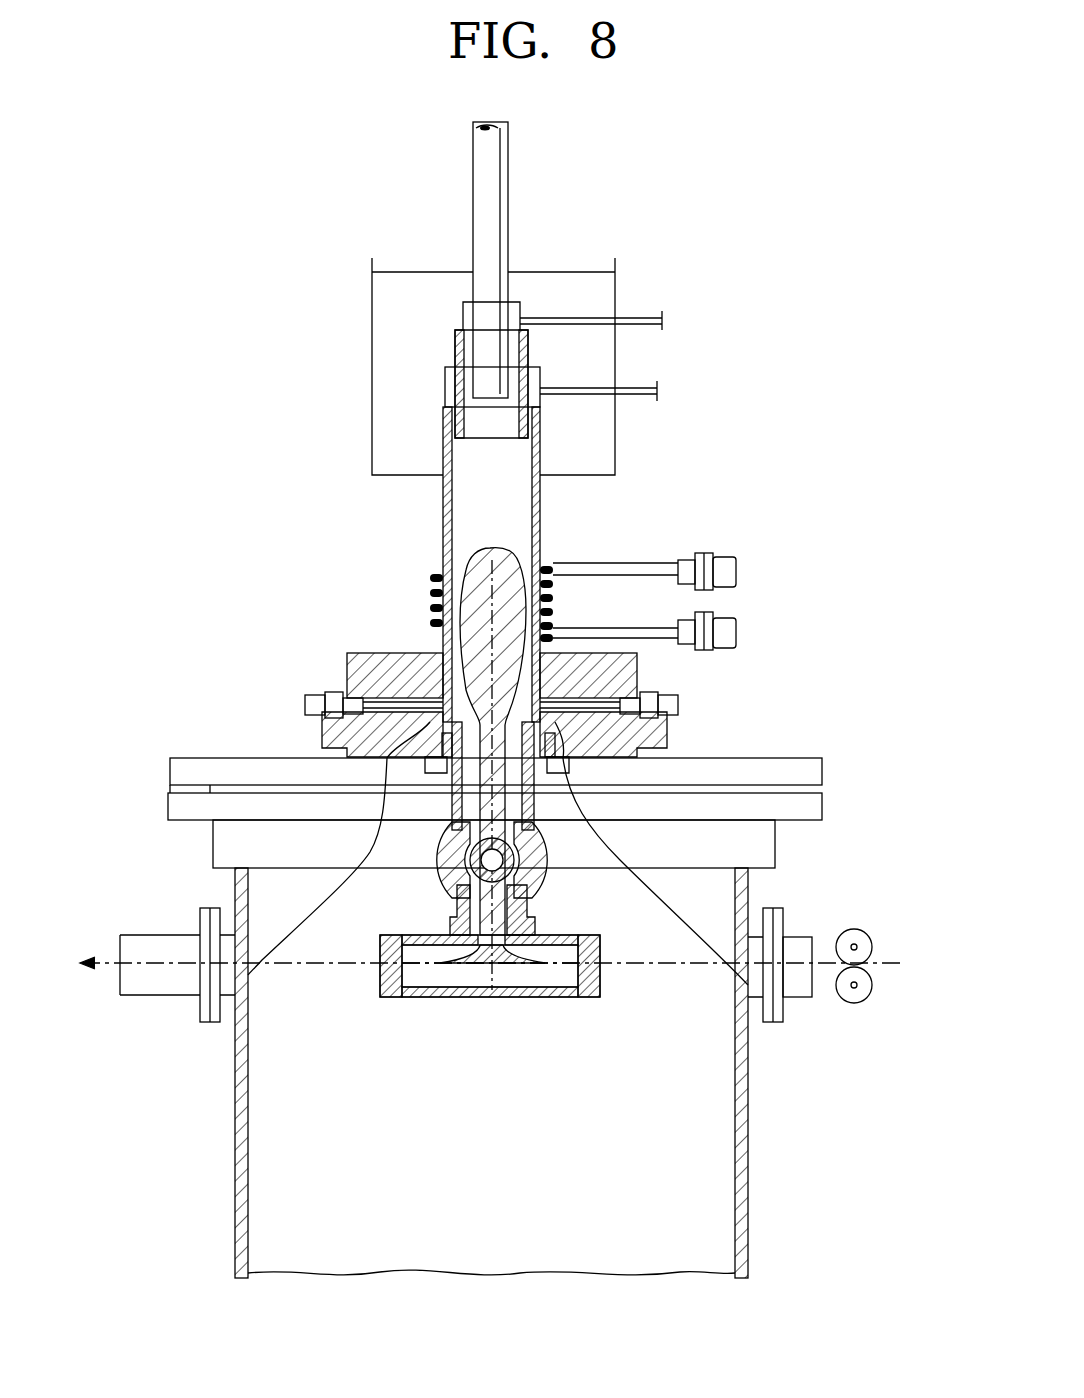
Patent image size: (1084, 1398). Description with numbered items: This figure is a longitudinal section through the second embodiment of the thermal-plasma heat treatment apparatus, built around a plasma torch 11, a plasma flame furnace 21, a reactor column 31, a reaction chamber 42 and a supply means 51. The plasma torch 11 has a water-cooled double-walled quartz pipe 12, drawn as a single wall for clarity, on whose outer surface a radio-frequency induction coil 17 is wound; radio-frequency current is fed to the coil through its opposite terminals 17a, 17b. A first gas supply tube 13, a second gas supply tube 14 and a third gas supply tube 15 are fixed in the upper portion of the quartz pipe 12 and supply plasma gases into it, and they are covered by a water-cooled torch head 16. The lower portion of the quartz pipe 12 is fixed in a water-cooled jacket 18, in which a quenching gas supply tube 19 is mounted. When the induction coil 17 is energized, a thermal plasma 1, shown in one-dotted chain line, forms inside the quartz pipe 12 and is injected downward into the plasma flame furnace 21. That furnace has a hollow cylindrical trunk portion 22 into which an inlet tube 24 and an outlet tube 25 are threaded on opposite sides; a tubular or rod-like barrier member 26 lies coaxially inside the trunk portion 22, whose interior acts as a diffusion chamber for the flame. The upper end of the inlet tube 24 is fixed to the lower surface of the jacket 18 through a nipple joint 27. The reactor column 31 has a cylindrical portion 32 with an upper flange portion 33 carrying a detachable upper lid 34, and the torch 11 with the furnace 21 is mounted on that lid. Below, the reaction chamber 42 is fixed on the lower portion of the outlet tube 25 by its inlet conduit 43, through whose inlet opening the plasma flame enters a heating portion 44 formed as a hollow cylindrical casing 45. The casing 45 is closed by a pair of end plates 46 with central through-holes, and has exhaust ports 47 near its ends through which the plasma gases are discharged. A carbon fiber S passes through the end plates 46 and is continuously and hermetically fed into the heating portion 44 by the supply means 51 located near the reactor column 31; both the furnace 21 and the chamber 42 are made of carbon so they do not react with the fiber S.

The thermal plasma 1 is at (516, 572).
The plasma torch 11 is at (646, 205).
The water-cooled double-walled quartz pipe 12 is at (443, 522).
The first gas supply tube 13 is at (508, 192).
The second gas supply tube 14 is at (652, 312).
The third gas supply tube 15 is at (650, 388).
The water-cooled torch head 16 is at (372, 370).
The radio-frequency induction coil 17 is at (430, 593).
The terminal of the induction coil 17a is at (738, 572).
The terminal of the induction coil 17b is at (738, 637).
The water-cooled jacket 18 is at (637, 683).
The quenching gas supply tube 19 is at (306, 695).
The plasma flame furnace 21 is at (580, 870).
The hollow cylindrical trunk portion 22 is at (437, 855).
The inlet tube 24 is at (455, 797).
The outlet tube 25 is at (535, 921).
The barrier member 26 is at (511, 858).
The nipple joint 27 is at (556, 775).
The reactor column 31 is at (766, 1066).
The cylindrical portion 32 is at (746, 1112).
The upper flange portion 33 is at (775, 848).
The upper lid 34 is at (822, 776).
The reaction chamber 42 is at (548, 1012).
The inlet conduit 43 is at (450, 921).
The heating portion 44 is at (482, 978).
The hollow cylindrical casing 45 is at (510, 1000).
The end plates 46 is at (380, 980).
The exhaust ports 47 is at (420, 997).
The supply means 51 is at (871, 936).
The carbon fiber S is at (893, 966).